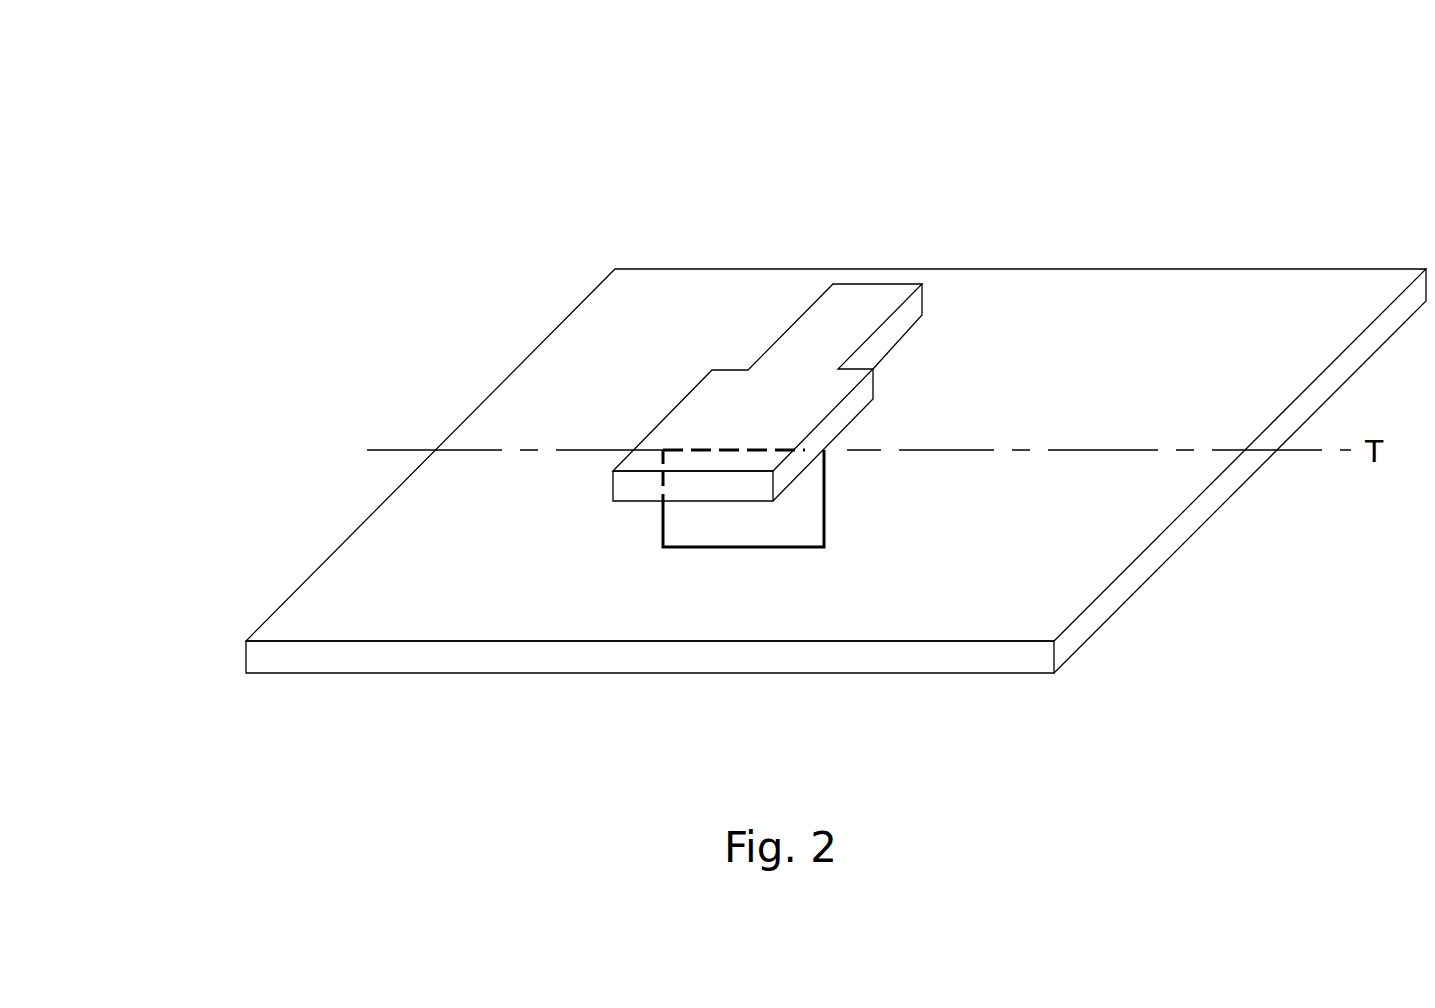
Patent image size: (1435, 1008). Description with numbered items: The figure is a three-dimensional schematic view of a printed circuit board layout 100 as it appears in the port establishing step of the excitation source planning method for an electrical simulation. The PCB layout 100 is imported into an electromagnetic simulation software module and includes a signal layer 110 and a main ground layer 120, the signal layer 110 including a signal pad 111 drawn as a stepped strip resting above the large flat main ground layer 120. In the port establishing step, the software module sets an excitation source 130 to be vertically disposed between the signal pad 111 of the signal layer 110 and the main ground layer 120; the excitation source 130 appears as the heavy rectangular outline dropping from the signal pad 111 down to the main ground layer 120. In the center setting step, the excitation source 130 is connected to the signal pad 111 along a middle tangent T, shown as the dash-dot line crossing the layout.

The printed circuit board layout 100 is at (160, 79).
The signal layer 110 is at (605, 355).
The signal pad 111 is at (703, 410).
The main ground layer 120 is at (322, 604).
The excitation source 130 is at (683, 527).